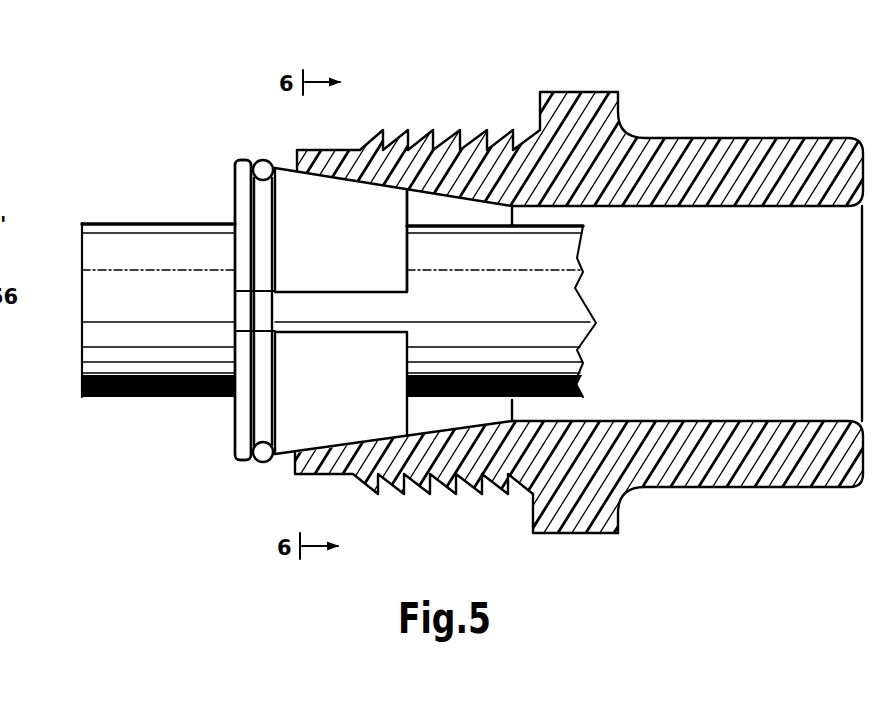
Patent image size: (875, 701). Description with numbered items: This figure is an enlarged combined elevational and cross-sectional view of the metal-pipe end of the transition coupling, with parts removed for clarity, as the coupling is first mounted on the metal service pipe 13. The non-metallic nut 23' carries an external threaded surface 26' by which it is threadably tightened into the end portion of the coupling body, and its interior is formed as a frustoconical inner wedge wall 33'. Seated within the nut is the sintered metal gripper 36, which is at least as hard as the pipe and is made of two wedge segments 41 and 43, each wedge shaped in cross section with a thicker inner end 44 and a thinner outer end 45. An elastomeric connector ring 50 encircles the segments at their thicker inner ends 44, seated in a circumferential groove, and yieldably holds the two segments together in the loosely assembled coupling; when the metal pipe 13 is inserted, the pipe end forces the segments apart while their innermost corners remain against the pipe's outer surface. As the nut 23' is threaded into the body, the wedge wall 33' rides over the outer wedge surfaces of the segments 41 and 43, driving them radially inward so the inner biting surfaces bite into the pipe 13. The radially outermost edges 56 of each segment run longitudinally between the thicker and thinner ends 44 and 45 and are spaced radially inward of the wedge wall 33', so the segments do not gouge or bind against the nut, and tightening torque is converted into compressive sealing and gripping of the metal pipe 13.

The metal service pipe 13 is at (142, 235).
The nut 23' is at (578, 287).
The threaded surface 26' is at (417, 284).
The inner wedge wall 33' is at (397, 311).
The gripper 36 is at (232, 462).
The wedge segment 41 is at (283, 168).
The wedge segment 43 is at (285, 455).
The thicker inner end 44 is at (233, 207).
The thinner outer end 45 is at (410, 282).
The connector ring 50 is at (258, 160).
The radially outermost edges 56 is at (236, 331).